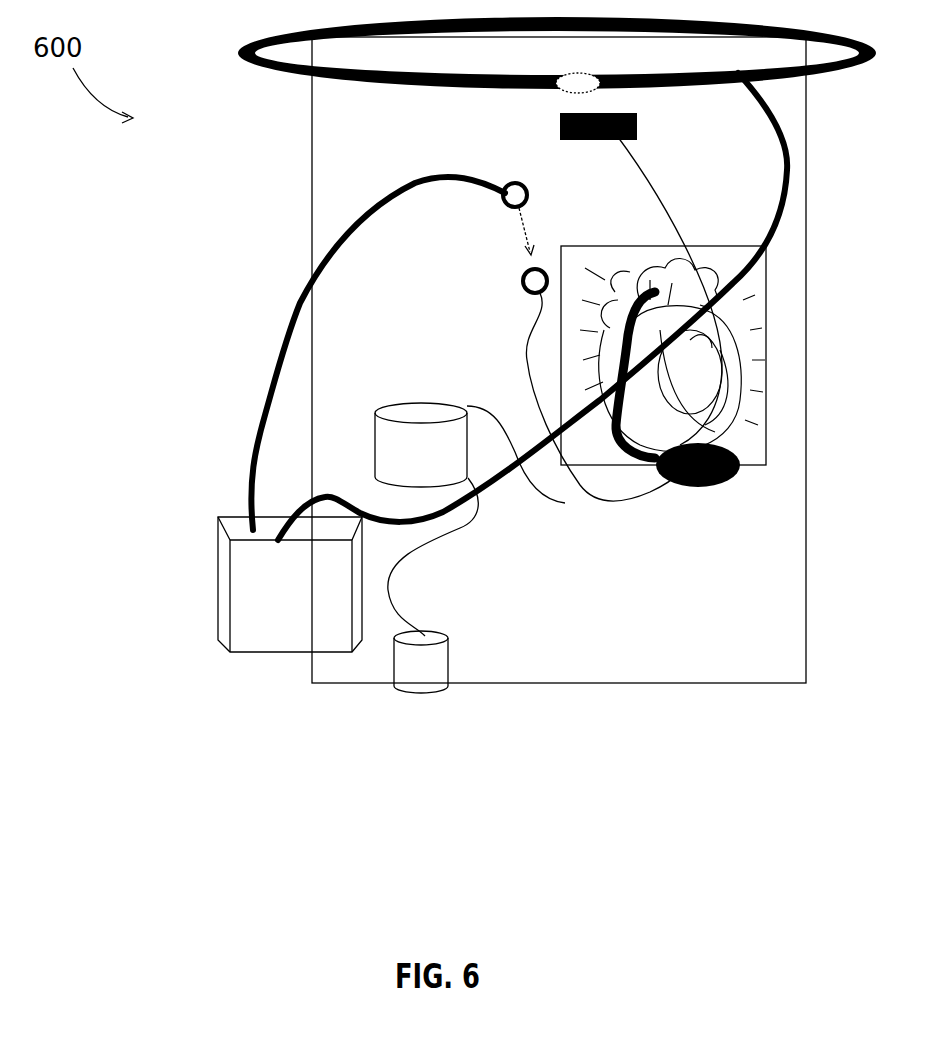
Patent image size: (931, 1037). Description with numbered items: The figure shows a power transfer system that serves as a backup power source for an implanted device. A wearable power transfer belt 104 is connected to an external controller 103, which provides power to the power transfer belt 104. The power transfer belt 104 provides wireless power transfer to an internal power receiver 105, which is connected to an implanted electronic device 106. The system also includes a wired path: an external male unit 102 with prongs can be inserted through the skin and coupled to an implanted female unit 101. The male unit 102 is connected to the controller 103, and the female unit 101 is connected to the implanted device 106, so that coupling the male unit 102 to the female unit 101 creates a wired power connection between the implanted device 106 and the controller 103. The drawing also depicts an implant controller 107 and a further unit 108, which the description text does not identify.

The implanted female unit 101 is at (520, 282).
The external male unit 102 is at (500, 196).
The external controller 103 is at (218, 517).
The power transfer belt 104 is at (238, 55).
The internal power receiver 105 is at (637, 133).
The implanted electronic device 106 is at (705, 478).
The implant controller 107 is at (375, 437).
The power source 108 is at (450, 656).